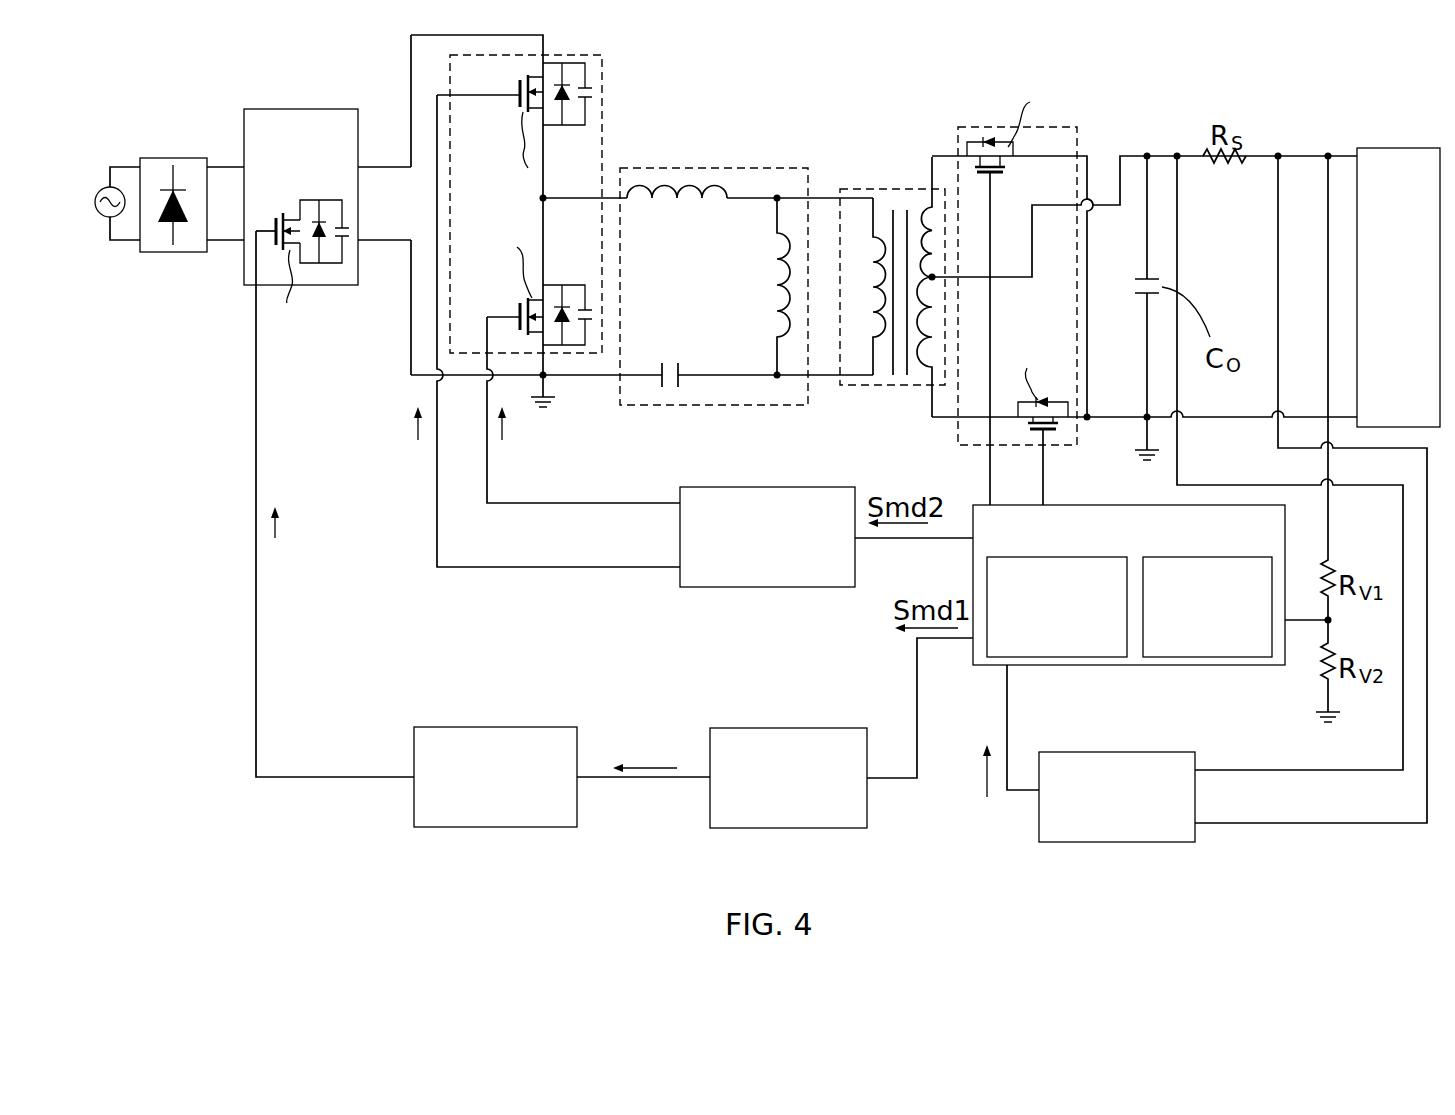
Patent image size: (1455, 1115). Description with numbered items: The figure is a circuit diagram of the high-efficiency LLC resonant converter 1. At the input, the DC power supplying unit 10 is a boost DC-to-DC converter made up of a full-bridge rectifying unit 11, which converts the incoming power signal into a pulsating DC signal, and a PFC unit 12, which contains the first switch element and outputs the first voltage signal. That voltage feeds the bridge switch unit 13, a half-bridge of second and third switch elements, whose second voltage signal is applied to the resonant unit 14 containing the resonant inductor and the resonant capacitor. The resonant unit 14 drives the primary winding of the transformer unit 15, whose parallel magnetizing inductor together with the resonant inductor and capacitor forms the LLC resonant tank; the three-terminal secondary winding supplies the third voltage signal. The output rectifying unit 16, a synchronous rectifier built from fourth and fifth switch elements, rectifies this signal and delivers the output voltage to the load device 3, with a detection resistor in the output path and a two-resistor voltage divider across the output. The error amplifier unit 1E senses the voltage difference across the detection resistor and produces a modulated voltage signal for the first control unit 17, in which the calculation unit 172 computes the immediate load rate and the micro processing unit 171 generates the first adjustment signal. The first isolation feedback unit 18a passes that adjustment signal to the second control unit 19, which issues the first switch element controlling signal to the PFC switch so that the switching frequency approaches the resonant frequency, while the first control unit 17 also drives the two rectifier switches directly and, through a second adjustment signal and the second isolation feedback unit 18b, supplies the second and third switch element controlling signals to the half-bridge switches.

The high-efficiency LLC resonant converter 1 is at (208, 745).
The load device 3 is at (1387, 148).
The DC power supplying unit 10 is at (208, 93).
The full-bridge rectifying unit 11 is at (200, 247).
The PFC unit 12 is at (355, 285).
The bridge switch unit 13 is at (603, 63).
The resonant unit 14 is at (727, 168).
The transformer unit 15 is at (878, 189).
The output rectifying unit 16 is at (1077, 137).
The first control unit 17 is at (1090, 582).
The micro processing unit 171 is at (1043, 660).
The calculation unit 172 is at (1177, 660).
The first isolation feedback unit 18a is at (710, 737).
The second isolation feedback unit 18b is at (758, 587).
The second control unit 19 is at (417, 745).
The error amplifier unit 1E is at (1197, 760).